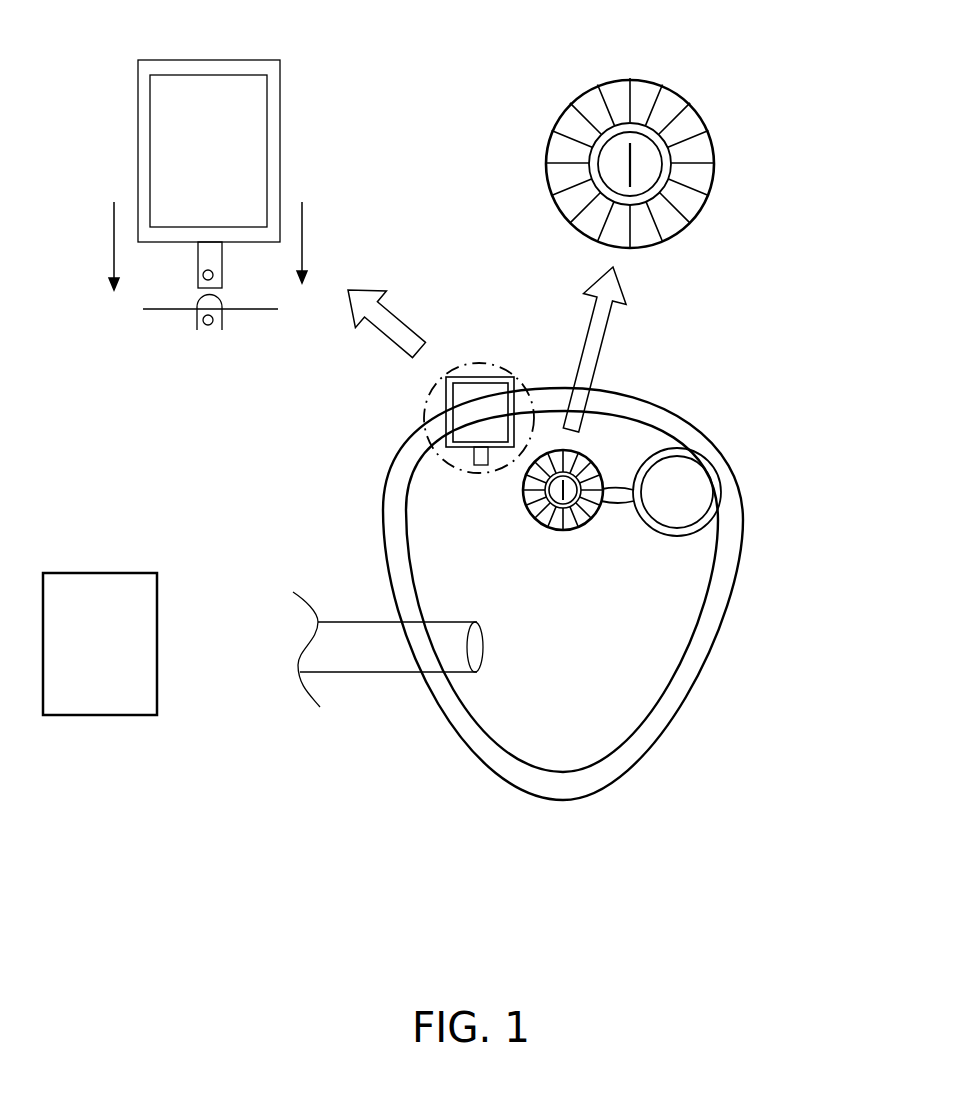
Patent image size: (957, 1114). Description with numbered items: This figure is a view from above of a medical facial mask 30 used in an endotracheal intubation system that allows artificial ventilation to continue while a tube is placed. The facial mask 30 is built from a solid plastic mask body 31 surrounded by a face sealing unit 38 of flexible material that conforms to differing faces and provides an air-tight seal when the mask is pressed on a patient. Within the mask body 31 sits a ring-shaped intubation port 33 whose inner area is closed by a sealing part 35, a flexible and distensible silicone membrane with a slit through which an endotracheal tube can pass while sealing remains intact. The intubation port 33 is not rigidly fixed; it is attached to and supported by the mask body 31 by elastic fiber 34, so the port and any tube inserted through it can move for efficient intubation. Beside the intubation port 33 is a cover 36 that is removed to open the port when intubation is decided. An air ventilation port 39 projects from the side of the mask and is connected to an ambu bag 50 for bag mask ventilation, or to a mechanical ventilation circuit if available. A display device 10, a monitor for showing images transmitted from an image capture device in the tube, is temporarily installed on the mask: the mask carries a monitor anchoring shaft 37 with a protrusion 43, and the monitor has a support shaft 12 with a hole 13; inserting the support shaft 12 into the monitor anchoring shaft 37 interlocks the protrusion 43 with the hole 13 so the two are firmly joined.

The display device 10 is at (446, 415).
The support shaft 12 is at (223, 267).
The hole 13 is at (200, 277).
The facial mask 30 is at (574, 613).
The mask body 31 is at (560, 700).
The intubation port 33 is at (657, 142).
The elastic fiber 34 is at (637, 78).
The sealing part 35 is at (615, 165).
The cover 36 is at (677, 492).
The monitor anchoring shaft 37 is at (197, 323).
The face sealing unit 38 is at (722, 605).
The air ventilation port 39 is at (380, 652).
The protrusion 43 is at (210, 320).
The ambu bag 50 is at (205, 637).